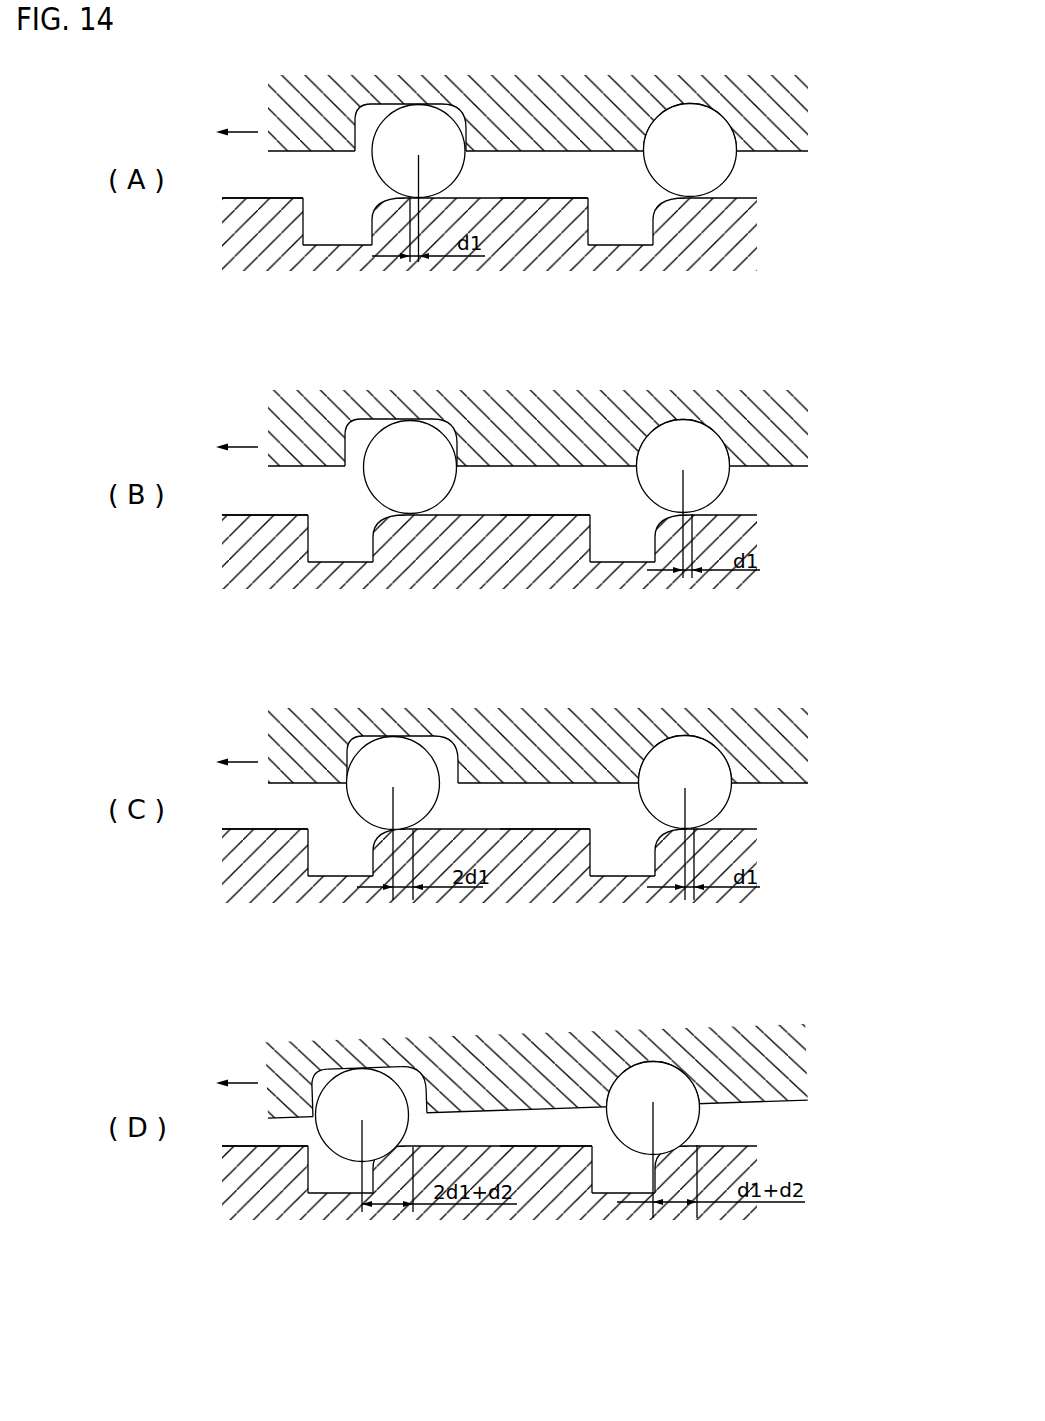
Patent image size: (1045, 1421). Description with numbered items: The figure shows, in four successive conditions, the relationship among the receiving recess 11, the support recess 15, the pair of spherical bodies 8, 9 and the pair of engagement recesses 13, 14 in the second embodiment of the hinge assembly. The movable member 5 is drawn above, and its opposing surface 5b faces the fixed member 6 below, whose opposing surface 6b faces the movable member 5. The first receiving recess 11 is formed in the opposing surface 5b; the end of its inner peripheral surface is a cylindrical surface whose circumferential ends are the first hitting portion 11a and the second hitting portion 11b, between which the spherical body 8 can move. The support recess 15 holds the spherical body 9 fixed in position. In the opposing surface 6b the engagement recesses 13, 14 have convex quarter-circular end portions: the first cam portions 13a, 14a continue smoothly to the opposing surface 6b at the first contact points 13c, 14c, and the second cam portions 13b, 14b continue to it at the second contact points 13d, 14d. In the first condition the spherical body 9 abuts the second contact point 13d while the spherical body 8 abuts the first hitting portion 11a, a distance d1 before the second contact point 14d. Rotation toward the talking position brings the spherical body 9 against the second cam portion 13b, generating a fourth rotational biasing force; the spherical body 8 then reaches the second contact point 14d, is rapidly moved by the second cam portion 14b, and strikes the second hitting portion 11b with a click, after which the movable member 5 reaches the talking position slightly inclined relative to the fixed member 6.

The movable member 5 is at (550, 91).
The opposing surface of the movable member 5b is at (792, 151).
The fixed member 6 is at (731, 262).
The opposing surface of the fixed member 6b is at (743, 198).
The spherical body 8 is at (417, 118).
The spherical body 9 is at (697, 120).
The first receiving recess 11 is at (387, 118).
The first hitting portion 11a is at (450, 135).
The second hitting portion 11b is at (351, 116).
The engagement recess 13 is at (618, 240).
The first cam portion 13a is at (593, 211).
The second cam portion 13b is at (657, 221).
The first contact point 13c is at (546, 198).
The second contact point 13d is at (691, 183).
The engagement recess 14 is at (330, 242).
The first cam portion 14a is at (307, 211).
The second cam portion 14b is at (377, 221).
The first contact point 14c is at (258, 198).
The second contact point 14d is at (395, 172).
The support recess 15 is at (661, 128).